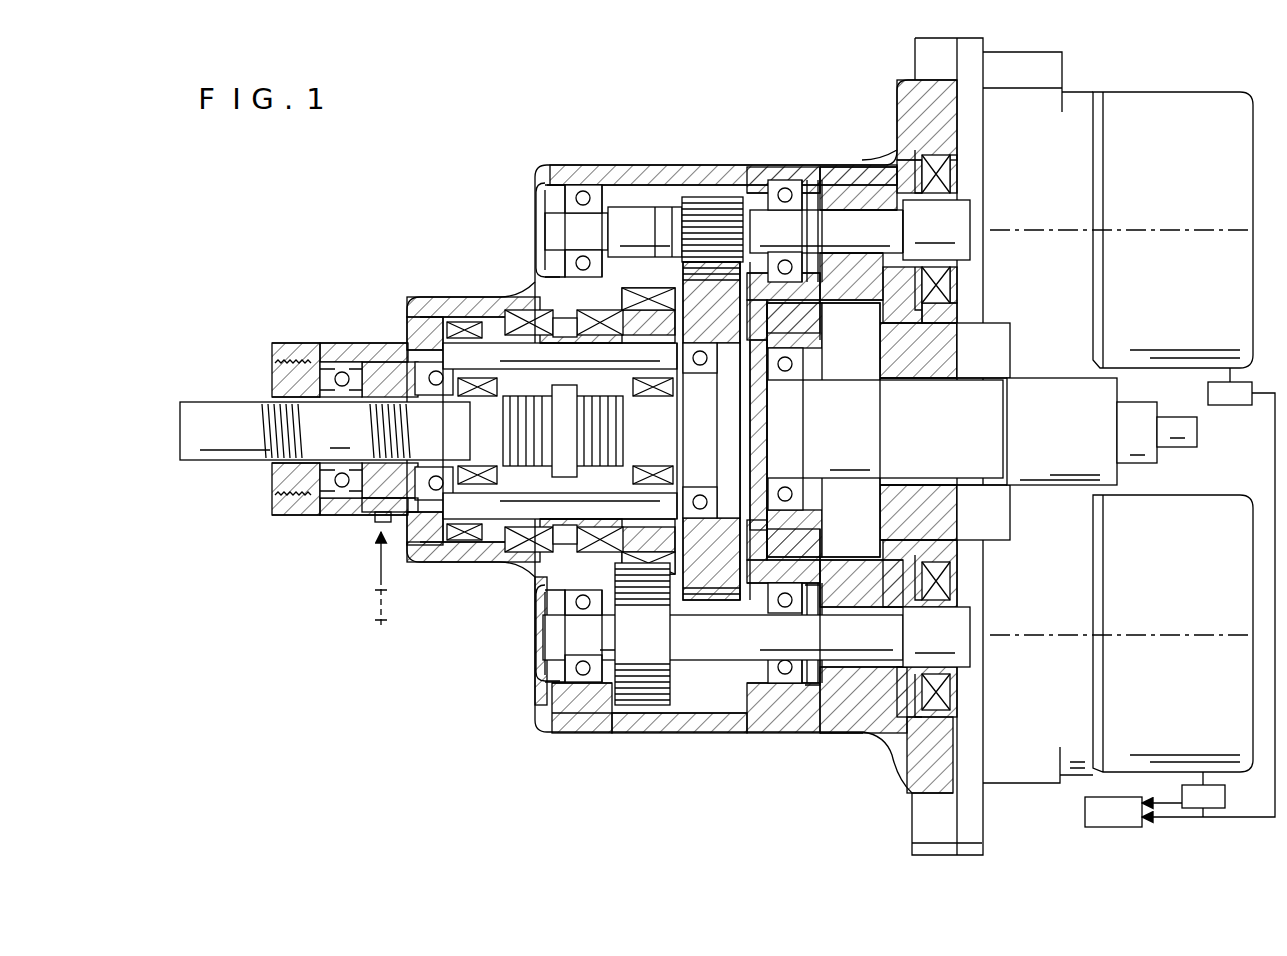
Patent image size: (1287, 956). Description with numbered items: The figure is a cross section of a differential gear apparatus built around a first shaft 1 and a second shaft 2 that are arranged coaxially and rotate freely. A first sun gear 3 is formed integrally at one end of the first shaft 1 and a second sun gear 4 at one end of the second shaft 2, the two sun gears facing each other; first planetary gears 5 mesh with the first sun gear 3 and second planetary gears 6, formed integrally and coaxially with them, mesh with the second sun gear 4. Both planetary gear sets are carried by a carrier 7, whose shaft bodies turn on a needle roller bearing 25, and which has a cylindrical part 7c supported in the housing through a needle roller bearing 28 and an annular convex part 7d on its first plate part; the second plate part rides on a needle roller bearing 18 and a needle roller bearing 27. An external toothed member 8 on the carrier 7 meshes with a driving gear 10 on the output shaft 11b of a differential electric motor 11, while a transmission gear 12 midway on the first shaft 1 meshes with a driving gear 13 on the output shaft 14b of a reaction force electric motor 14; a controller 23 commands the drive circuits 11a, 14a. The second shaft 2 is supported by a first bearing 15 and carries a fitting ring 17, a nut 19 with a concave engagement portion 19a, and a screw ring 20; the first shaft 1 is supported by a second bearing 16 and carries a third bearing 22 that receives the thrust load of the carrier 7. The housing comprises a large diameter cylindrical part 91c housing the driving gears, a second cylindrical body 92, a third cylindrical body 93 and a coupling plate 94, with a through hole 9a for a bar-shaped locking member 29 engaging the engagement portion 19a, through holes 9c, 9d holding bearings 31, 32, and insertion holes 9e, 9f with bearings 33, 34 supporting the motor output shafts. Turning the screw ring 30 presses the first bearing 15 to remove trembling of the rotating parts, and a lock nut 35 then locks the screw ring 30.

The first shaft 1 is at (815, 428).
The second shaft 2 is at (209, 463).
The first sun gear 3 is at (625, 420).
The second sun gear 4 is at (550, 305).
The first planetary gears 5 is at (622, 292).
The second planetary gears 6 is at (515, 312).
The carrier 7 is at (700, 230).
The cylindrical part 7c is at (640, 209).
The annular convex part 7d is at (758, 212).
The external toothed member 8 is at (683, 572).
The through hole 9a is at (378, 523).
The through hole 9c is at (572, 684).
The through hole 9d is at (568, 188).
The insertion hole 9e is at (853, 200).
The insertion hole 9f is at (785, 182).
The driving gear 10 is at (640, 706).
The differential electric motor 11 is at (1005, 785).
The drive circuit 11a is at (1205, 810).
The output shaft 11b is at (692, 735).
The transmission gear 12 is at (757, 330).
The driving gear 13 is at (752, 300).
The reaction force electric motor 14 is at (1015, 93).
The drive circuit 14a is at (1230, 405).
The output shaft 14b is at (663, 209).
The first bearing 15 is at (342, 364).
The second bearing 16 is at (790, 348).
The fitting ring 17 is at (395, 345).
The needle roller bearing 18 is at (413, 330).
The nut 19 is at (388, 377).
The engagement portion 19a is at (372, 500).
The screw ring 20 is at (272, 395).
The third bearing 22 is at (705, 375).
The controller 23 is at (1100, 827).
The needle roller bearing 25 is at (478, 378).
The needle roller bearing 27 is at (460, 345).
The needle roller bearing 28 is at (540, 340).
The locking member 29 is at (355, 628).
The screw ring 30 is at (290, 365).
The bearing 31 is at (560, 690).
The bearing 32 is at (548, 185).
The bearing 33 is at (812, 685).
The bearing 34 is at (810, 207).
The lock nut 35 is at (300, 345).
The large diameter cylindrical part 91c is at (620, 170).
The second cylindrical body 92 is at (985, 340).
The third cylindrical body 93 is at (897, 85).
The coupling plate 94 is at (822, 150).